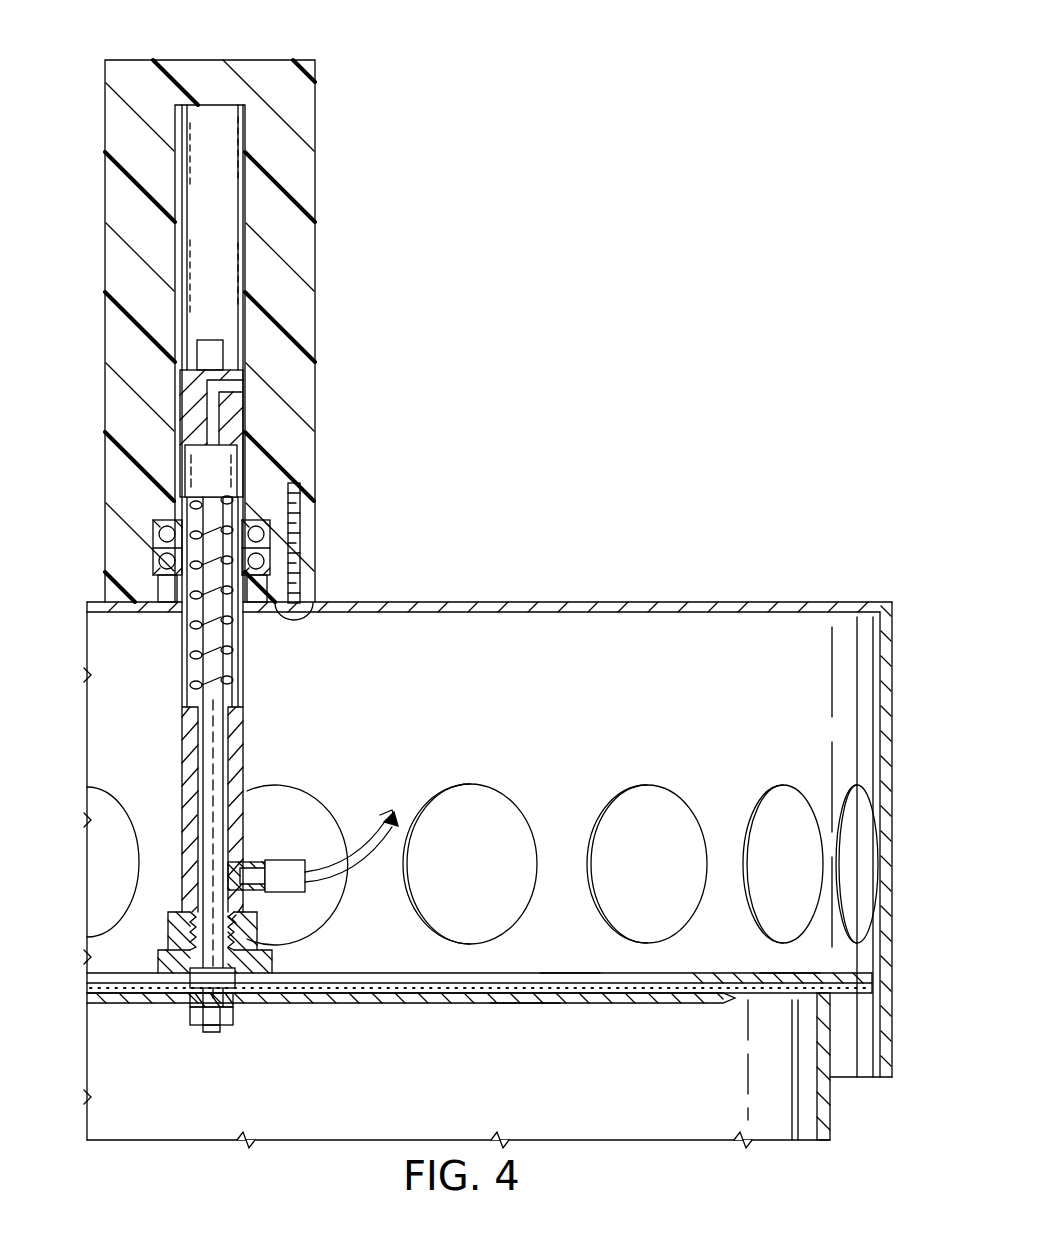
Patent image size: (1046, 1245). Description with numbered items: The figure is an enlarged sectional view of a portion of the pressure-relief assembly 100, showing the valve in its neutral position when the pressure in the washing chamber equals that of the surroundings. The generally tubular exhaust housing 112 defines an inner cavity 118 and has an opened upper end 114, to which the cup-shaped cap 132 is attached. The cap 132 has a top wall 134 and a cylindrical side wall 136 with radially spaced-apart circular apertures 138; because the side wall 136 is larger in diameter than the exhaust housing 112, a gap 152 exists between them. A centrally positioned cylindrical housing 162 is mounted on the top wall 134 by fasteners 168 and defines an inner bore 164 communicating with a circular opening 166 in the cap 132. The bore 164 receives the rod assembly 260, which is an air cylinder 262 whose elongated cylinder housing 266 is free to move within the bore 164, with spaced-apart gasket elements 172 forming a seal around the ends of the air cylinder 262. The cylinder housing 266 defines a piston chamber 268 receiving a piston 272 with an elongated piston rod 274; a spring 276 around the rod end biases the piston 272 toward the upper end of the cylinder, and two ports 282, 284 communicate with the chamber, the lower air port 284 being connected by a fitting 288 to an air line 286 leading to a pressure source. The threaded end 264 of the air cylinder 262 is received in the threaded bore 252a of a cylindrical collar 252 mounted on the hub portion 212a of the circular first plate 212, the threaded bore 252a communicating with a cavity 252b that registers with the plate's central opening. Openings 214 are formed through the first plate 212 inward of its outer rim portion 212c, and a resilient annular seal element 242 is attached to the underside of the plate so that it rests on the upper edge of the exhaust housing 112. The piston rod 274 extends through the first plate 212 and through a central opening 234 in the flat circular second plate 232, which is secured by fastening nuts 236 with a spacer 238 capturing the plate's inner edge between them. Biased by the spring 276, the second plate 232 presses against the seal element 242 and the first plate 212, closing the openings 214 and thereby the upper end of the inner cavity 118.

The pressure-relief assembly 100 is at (552, 430).
The exhaust housing 112 is at (830, 1112).
The upper end 114 is at (817, 1002).
The inner cavity 118 is at (632, 1116).
The cap 132 is at (538, 603).
The top wall 134 is at (658, 606).
The side wall 136 is at (885, 664).
The circular apertures 138 is at (765, 812).
The gap 152 is at (847, 1050).
The cylindrical housing 162 is at (300, 107).
The inner bore 164 is at (246, 195).
The circular opening 166 is at (270, 618).
The fasteners 168 is at (298, 520).
The gasket elements 172 is at (272, 562).
The first plate 212 is at (713, 973).
The hub portion 212a is at (285, 984).
The rim portion 212c is at (790, 972).
The opening 214 is at (571, 972).
The second plate 232 is at (527, 1004).
The opening 234 is at (213, 1010).
The fastening nuts 236 is at (236, 999).
The spacer 238 is at (193, 1006).
The annular seal element 242 is at (745, 995).
The cylindrical collar 252 is at (270, 955).
The threaded bore 252a is at (238, 922).
The cavity 252b is at (188, 977).
The rod assembly 260 is at (255, 738).
The air cylinder 262 is at (175, 671).
The threaded end 264 is at (136, 898).
The cylinder housing 266 is at (182, 757).
The piston chamber 268 is at (183, 615).
The piston 272 is at (225, 470).
The piston rod 274 is at (215, 808).
The spring 276 is at (232, 672).
The port 282 is at (238, 383).
The air port 284 is at (256, 866).
The air line 286 is at (392, 840).
The fitting 288 is at (293, 888).